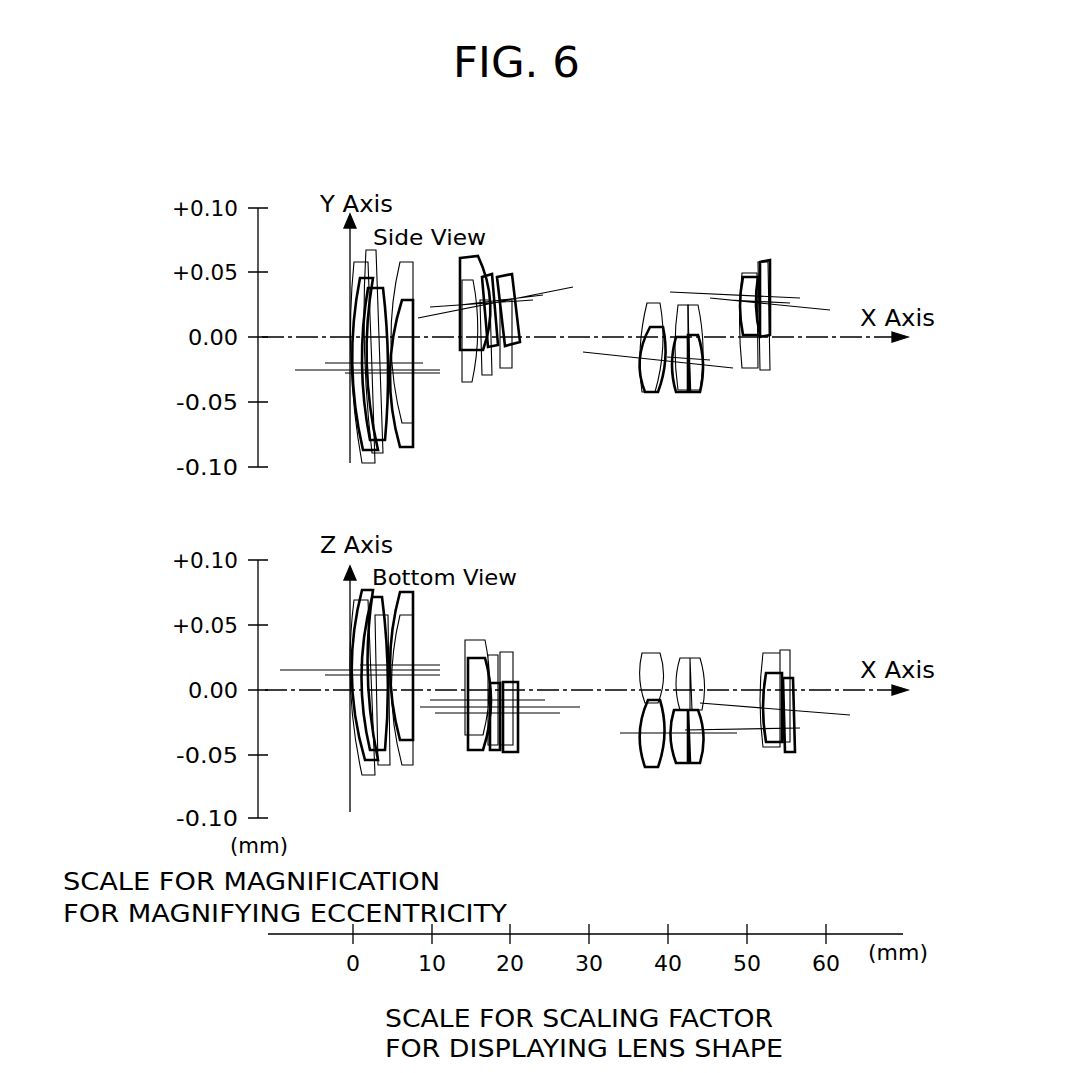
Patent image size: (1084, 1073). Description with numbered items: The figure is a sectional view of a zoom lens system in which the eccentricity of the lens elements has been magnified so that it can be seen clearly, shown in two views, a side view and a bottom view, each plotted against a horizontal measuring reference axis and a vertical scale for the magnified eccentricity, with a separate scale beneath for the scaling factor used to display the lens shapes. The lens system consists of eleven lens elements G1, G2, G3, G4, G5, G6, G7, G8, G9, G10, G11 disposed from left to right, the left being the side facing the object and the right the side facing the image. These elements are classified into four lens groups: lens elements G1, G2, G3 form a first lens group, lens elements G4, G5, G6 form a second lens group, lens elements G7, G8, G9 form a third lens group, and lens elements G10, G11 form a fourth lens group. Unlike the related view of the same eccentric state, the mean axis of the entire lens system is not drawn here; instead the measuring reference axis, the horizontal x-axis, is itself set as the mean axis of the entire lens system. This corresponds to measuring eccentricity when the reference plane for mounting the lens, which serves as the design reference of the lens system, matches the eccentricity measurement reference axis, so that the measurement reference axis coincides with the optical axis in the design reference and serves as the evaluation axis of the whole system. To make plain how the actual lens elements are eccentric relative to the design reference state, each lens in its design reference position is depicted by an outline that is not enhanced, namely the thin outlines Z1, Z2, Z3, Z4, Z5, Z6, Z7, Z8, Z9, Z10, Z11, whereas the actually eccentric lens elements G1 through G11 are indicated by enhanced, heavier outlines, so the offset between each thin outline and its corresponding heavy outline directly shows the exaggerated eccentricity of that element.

The lens element G1 is at (365, 452).
The lens element G2 is at (380, 447).
The lens element G3 is at (415, 445).
The lens element G4 is at (480, 258).
The lens element G5 is at (492, 275).
The lens element G6 is at (512, 278).
The lens element G7 is at (650, 395).
The lens element G8 is at (683, 393).
The lens element G9 is at (695, 393).
The lens element G10 is at (753, 270).
The lens element G11 is at (765, 260).
The design reference lens outline Z1 is at (352, 290).
The design reference lens outline Z2 is at (373, 268).
The design reference lens outline Z3 is at (432, 255).
The design reference lens outline Z4 is at (472, 382).
The design reference lens outline Z5 is at (490, 378).
The design reference lens outline Z6 is at (505, 372).
The design reference lens outline Z7 is at (655, 303).
The design reference lens outline Z8 is at (680, 305).
The design reference lens outline Z9 is at (700, 305).
The design reference lens outline Z10 is at (752, 375).
The design reference lens outline Z11 is at (765, 373).